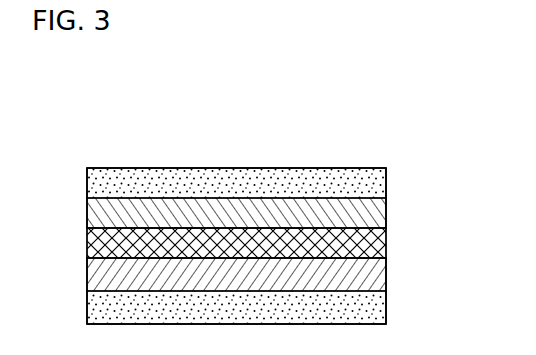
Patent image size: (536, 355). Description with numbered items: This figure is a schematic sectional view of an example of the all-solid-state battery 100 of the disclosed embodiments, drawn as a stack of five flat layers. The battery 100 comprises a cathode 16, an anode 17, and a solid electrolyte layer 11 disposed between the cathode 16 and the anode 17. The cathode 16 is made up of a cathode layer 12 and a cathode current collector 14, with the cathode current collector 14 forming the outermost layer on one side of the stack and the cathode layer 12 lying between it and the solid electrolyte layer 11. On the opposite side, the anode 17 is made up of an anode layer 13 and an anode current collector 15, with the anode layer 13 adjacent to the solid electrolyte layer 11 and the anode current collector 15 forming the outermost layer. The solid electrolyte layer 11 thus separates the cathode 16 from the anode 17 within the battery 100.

The all-solid-state battery 100 is at (108, 72).
The solid electrolyte layer 11 is at (387, 238).
The cathode layer 12 is at (387, 206).
The anode layer 13 is at (387, 273).
The cathode current collector 14 is at (387, 186).
The anode current collector 15 is at (387, 303).
The cathode 16 is at (457, 163).
The anode 17 is at (457, 273).